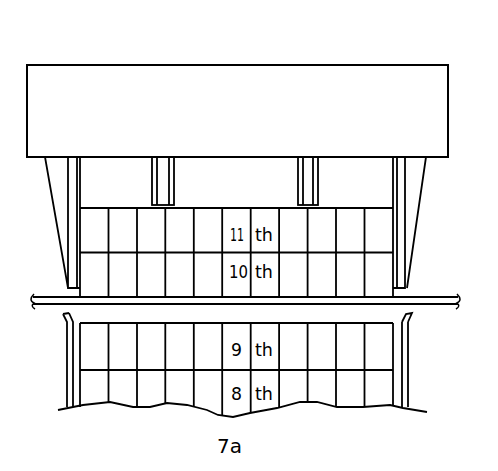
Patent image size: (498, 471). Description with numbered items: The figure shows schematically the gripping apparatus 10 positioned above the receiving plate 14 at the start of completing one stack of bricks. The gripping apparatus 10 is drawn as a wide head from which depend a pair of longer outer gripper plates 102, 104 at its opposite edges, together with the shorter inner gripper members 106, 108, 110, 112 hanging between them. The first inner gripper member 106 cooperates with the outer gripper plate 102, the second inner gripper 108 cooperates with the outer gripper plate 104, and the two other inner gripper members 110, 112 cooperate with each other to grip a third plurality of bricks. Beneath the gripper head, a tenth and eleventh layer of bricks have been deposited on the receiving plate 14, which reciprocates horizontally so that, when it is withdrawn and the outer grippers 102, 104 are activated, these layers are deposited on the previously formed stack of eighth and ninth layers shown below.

The gripping apparatus 10 is at (230, 63).
The receiving plate 14 is at (418, 305).
The outer gripper plate 102 is at (61, 212).
The outer gripper plate 104 is at (412, 212).
The first inner gripper member 106 is at (162, 183).
The second inner gripper 108 is at (164, 183).
The inner gripper member 110 is at (303, 183).
The inner gripper member 112 is at (313, 193).